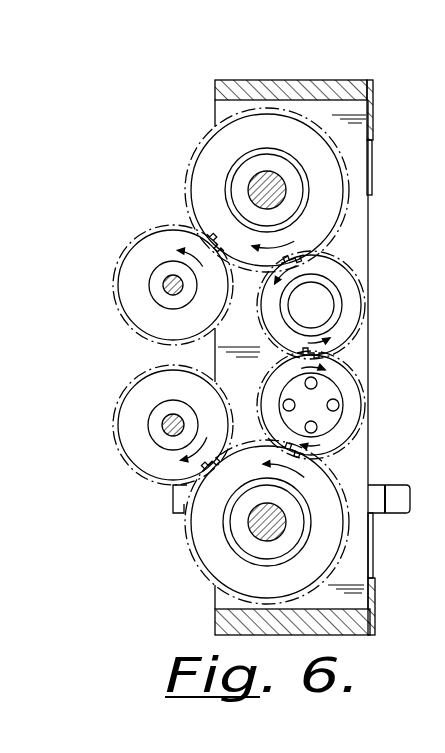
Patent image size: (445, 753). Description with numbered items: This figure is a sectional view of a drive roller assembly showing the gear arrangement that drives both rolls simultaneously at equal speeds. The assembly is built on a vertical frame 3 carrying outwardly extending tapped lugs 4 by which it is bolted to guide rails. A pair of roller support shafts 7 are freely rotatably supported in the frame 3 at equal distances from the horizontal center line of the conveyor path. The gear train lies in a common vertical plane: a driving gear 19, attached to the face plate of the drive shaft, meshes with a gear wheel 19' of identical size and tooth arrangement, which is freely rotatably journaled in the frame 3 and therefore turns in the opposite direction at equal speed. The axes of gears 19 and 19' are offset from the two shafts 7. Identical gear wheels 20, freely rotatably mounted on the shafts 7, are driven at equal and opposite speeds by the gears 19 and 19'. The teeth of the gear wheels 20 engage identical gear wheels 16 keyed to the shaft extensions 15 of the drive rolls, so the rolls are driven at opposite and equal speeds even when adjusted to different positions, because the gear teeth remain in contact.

The vertical frame 3 is at (264, 84).
The tapped lugs 4 is at (183, 493).
The roller support shafts 7 is at (258, 188).
The shaft extensions 15 is at (169, 281).
The gear wheels 16 is at (132, 292).
The driving gear 19 is at (333, 405).
The gear wheel 19' is at (335, 305).
The gear wheels 20 is at (323, 170).